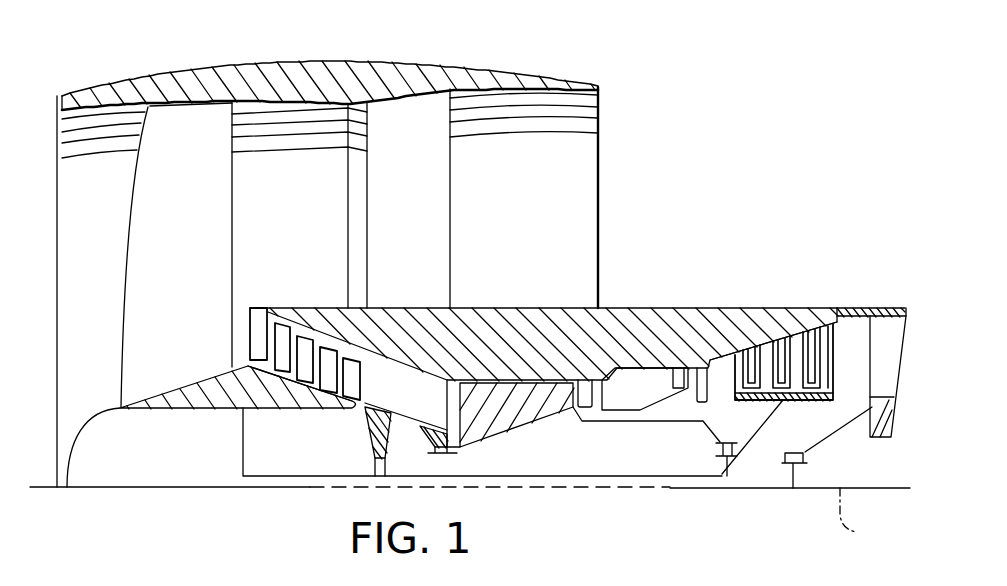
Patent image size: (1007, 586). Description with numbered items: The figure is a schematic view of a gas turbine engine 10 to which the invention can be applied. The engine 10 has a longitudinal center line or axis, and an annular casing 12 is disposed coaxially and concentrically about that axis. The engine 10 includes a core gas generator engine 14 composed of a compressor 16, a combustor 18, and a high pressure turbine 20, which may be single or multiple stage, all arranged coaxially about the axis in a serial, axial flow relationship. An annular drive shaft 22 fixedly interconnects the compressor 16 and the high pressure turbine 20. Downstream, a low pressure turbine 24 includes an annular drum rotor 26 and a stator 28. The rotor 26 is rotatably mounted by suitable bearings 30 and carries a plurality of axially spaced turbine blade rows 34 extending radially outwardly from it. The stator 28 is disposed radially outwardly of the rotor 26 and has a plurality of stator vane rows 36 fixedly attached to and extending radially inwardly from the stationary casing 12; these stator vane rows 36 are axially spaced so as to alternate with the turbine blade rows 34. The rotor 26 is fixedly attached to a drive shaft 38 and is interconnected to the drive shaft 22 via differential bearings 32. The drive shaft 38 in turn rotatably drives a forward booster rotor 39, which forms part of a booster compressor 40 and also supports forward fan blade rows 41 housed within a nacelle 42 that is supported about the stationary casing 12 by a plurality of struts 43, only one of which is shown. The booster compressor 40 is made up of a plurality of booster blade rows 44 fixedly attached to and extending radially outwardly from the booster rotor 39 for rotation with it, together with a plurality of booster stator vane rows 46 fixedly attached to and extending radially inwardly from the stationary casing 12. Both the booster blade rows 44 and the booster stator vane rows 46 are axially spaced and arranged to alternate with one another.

The gas turbine engine 10 is at (712, 162).
The annular casing 12 is at (612, 307).
The core gas generator engine 14 is at (566, 420).
The compressor 16 is at (513, 433).
The combustor 18 is at (643, 412).
The high pressure turbine 20 is at (707, 383).
The annular drive shaft 22 is at (657, 425).
The low pressure turbine 24 is at (777, 323).
The annular drum rotor 26 is at (812, 402).
The stator 28 is at (808, 330).
The bearings 30 is at (793, 488).
The differential bearings 32 is at (722, 478).
The turbine blade rows 34 is at (852, 310).
The stator vane rows 36 is at (758, 355).
The drive shaft 38 is at (308, 478).
The forward booster rotor 39 is at (173, 410).
The booster compressor 40 is at (245, 323).
The forward fan blade rows 41 is at (189, 226).
The nacelle 42 is at (410, 63).
The struts 43 is at (418, 167).
The booster blade rows 44 is at (330, 380).
The booster stator vane rows 46 is at (303, 335).